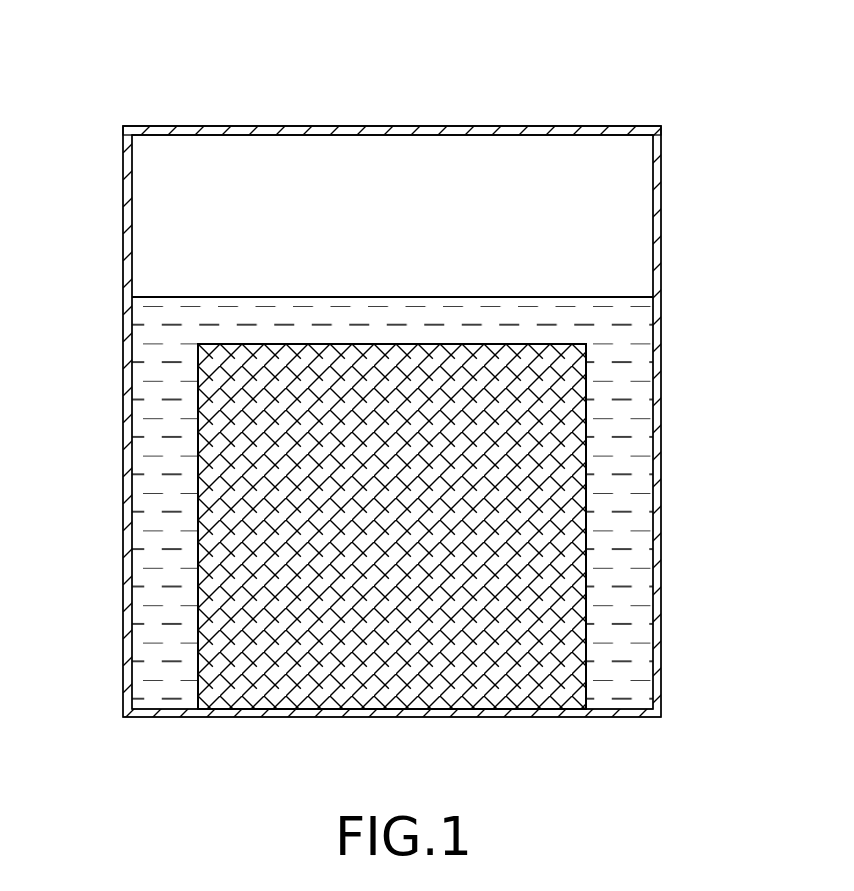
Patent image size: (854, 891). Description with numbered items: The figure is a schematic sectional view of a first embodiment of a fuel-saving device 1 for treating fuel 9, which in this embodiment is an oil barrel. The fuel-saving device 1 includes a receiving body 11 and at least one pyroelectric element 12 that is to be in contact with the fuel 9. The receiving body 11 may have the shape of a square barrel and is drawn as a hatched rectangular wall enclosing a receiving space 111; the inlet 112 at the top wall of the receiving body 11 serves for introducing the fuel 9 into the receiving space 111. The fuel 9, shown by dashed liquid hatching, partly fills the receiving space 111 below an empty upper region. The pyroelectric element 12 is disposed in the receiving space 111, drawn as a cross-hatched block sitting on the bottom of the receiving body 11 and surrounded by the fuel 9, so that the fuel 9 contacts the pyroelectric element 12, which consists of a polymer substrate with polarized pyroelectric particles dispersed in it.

The fuel-saving device 1 is at (108, 172).
The receiving body 11 is at (663, 429).
The receiving space 111 is at (628, 207).
The inlet 112 is at (162, 126).
The fuel 9 is at (150, 413).
The pyroelectric element 12 is at (588, 601).